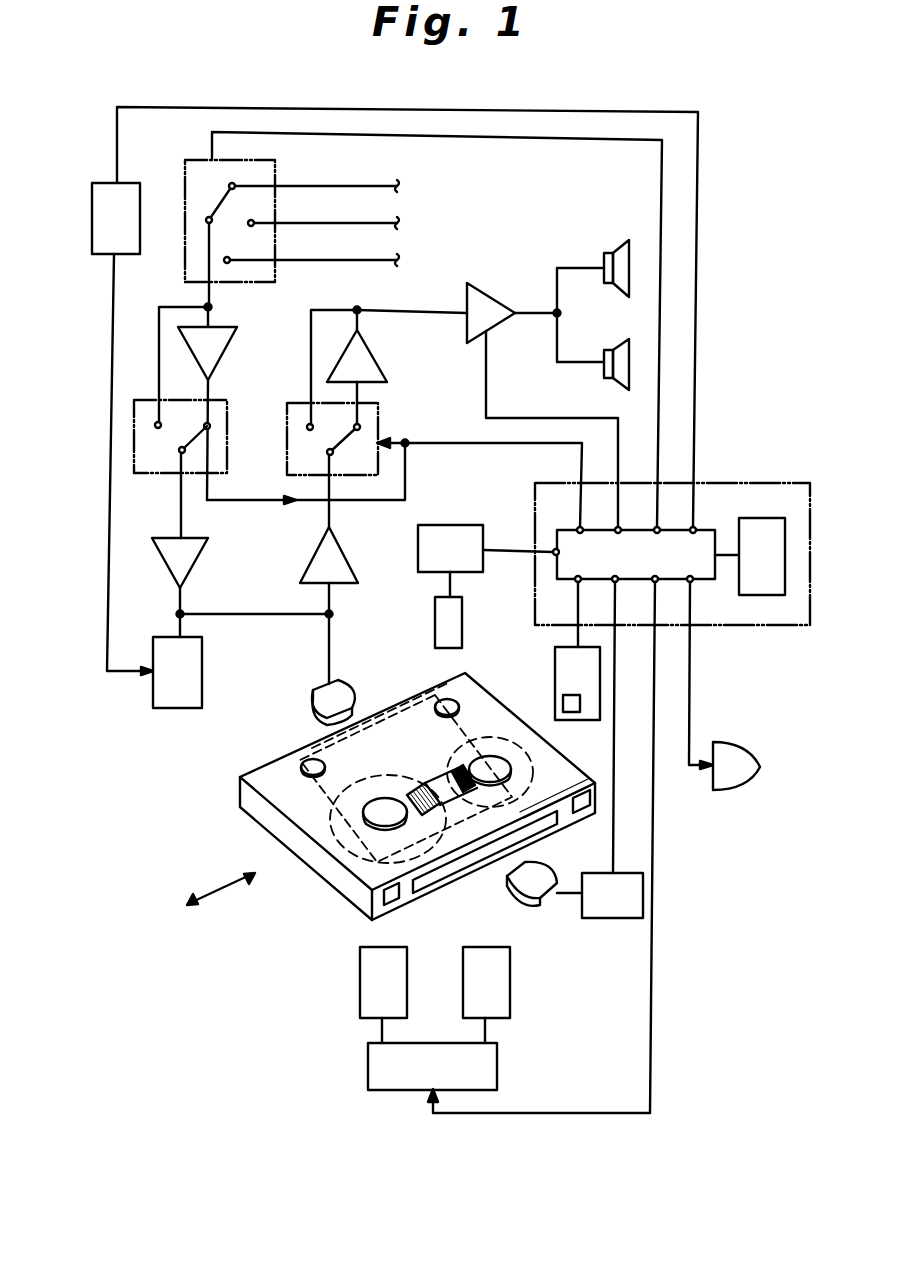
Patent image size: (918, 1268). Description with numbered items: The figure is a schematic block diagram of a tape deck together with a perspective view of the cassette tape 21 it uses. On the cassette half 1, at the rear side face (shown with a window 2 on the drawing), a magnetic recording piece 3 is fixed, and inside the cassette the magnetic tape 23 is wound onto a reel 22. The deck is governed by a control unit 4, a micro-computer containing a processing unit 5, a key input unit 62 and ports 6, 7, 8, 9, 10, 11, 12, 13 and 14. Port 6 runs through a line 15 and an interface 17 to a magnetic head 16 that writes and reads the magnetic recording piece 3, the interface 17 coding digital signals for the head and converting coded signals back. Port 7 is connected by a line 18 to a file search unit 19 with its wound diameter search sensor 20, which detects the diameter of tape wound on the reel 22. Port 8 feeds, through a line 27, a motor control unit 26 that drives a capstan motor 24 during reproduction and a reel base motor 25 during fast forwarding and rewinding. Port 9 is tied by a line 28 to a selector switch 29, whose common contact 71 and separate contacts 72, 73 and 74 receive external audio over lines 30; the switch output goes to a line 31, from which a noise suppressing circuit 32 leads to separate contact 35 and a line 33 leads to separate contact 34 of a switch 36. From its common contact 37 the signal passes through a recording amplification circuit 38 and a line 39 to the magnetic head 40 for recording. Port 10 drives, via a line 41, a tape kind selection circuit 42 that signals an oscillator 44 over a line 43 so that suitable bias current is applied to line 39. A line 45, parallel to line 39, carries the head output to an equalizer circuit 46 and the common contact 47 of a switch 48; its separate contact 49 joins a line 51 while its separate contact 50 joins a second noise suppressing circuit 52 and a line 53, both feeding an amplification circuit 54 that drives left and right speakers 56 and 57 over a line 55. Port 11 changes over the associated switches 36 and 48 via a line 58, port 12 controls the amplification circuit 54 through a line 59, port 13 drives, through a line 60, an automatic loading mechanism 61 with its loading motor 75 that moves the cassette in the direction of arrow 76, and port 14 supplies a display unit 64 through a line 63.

The cassette half 1 is at (470, 690).
The window opening 2 is at (387, 900).
The magnetic recording piece 3 is at (485, 862).
The control unit 4 is at (741, 488).
The processing unit 5 is at (702, 567).
The port 6 is at (613, 582).
The port 7 is at (557, 530).
The port 8 is at (652, 582).
The port 9 is at (660, 528).
The port 10 is at (696, 528).
The port 11 is at (583, 528).
The port 12 is at (621, 528).
The port 13 is at (576, 582).
The port 14 is at (688, 582).
The line 15 is at (615, 827).
The magnetic head 16 is at (538, 903).
The interface 17 is at (602, 905).
The line 18 is at (503, 548).
The file search unit 19 is at (445, 536).
The wound diameter search sensor 20 is at (435, 620).
The cassette tape 21 is at (212, 792).
The reel 22 is at (495, 760).
The magnetic tape 23 is at (453, 777).
The motor 24 is at (368, 980).
The motor 25 is at (500, 982).
The motor control unit 26 is at (490, 1058).
The line 27 is at (652, 1001).
The line 28 is at (545, 140).
The selector switch 29 is at (258, 272).
The lines 30 is at (356, 259).
The line 31 is at (210, 290).
The noise suppressing circuit 32 is at (213, 348).
The line 33 is at (159, 349).
The separate contact 34 is at (156, 421).
The separate contact 35 is at (212, 424).
The switch 36 is at (140, 480).
The common contact 37 is at (153, 460).
The recording amplification circuit 38 is at (190, 555).
The line 39 is at (266, 613).
The magnetic head 40 is at (318, 701).
The line 41 is at (478, 112).
The tape kind selection circuit 42 is at (112, 196).
The line 43 is at (110, 457).
The oscillator 44 is at (196, 690).
The line 45 is at (332, 608).
The equalizer circuit 46 is at (333, 560).
The common contact 47 is at (290, 471).
The switch 48 is at (380, 428).
The separate contact 49 is at (302, 425).
The separate contact 50 is at (362, 440).
The line 51 is at (310, 347).
The noise suppressing circuit 52 is at (360, 353).
The line 53 is at (359, 311).
The amplification circuit 54 is at (487, 304).
The line 55 is at (540, 316).
The speaker 56 is at (622, 258).
The speaker 57 is at (620, 356).
The line 58 is at (500, 445).
The line 59 is at (525, 416).
The line 60 is at (578, 631).
The automatic loading mechanism 61 is at (596, 698).
The key input unit 62 is at (757, 530).
The line 63 is at (690, 692).
The display unit 64 is at (730, 752).
The common contact 71 is at (206, 220).
The separate contact 72 is at (235, 185).
The separate contact 73 is at (254, 222).
The separate contact 74 is at (230, 259).
The loading motor 75 is at (572, 712).
The arrow 76 is at (227, 889).